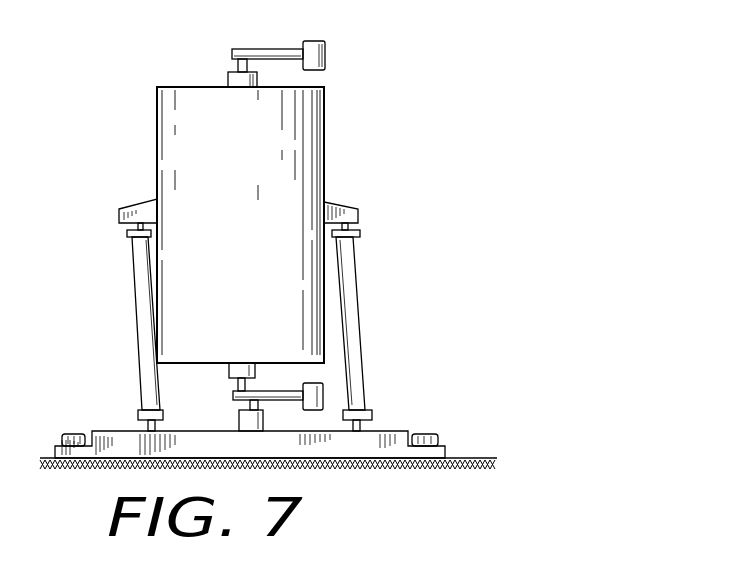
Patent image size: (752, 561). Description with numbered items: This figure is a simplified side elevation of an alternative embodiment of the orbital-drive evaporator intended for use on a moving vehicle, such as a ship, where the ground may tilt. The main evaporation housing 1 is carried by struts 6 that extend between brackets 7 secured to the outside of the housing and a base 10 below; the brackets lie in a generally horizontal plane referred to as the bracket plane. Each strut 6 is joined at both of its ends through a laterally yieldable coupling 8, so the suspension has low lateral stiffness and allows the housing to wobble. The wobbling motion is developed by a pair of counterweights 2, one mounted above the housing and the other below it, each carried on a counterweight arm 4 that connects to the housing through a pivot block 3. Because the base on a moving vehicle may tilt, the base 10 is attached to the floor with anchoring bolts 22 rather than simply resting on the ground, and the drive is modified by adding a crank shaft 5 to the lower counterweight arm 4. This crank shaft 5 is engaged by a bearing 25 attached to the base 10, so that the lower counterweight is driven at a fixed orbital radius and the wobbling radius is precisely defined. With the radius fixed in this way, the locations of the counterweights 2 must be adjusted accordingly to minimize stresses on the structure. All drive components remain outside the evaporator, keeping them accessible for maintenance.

The main evaporation housing 1 is at (233, 213).
The counterweight 2 is at (325, 56).
The upper pivot block 3 is at (233, 65).
The counterweight arm 4 is at (279, 48).
The crank shaft 5 is at (258, 405).
The strut 6 is at (134, 300).
The bracket 7 is at (140, 206).
The laterally yieldable coupling 8 is at (127, 233).
The base 10 is at (254, 449).
The anchor bolt 22 is at (428, 433).
The bearing 25 is at (239, 422).